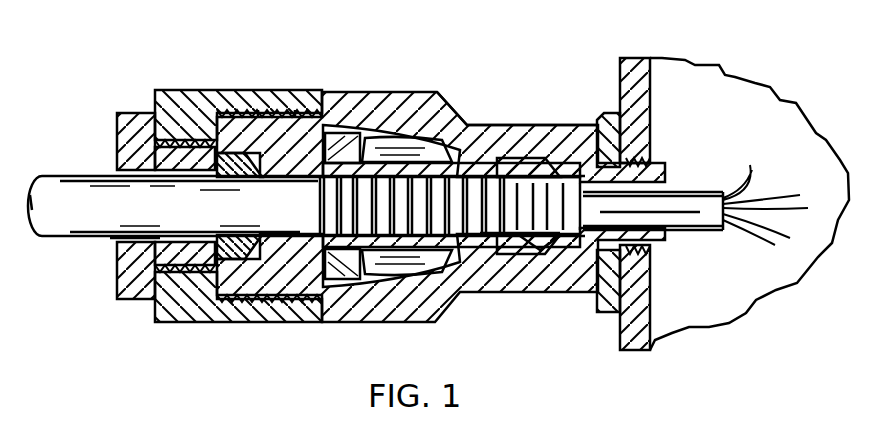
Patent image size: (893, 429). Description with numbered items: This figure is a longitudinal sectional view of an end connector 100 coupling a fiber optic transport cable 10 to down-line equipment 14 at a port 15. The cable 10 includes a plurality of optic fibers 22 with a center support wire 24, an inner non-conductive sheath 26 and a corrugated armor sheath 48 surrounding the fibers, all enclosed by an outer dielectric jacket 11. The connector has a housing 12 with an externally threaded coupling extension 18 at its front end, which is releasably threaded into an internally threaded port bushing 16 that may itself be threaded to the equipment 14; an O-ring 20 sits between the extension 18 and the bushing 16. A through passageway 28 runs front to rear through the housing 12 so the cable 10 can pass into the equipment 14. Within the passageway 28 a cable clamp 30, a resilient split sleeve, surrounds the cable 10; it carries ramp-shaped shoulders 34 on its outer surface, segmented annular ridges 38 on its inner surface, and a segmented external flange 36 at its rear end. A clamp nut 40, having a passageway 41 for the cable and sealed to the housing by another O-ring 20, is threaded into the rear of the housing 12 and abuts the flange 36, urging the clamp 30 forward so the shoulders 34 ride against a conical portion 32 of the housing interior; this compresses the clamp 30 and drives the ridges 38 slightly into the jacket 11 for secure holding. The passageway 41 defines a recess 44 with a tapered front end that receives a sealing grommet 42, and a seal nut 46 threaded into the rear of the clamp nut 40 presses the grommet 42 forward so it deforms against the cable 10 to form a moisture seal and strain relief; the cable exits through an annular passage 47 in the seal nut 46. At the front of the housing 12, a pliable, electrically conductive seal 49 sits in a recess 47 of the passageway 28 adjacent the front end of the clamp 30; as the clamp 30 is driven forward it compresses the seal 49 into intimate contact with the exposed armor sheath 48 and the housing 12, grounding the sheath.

The fiber optic transport cable 10 is at (70, 158).
The outer dielectric protective covering or jacket 11 is at (72, 237).
The housing 12 is at (427, 97).
The down-line equipment 14 is at (652, 97).
The port 15 is at (663, 147).
The port bushing 16 is at (597, 312).
The coupling extension 18 is at (660, 160).
The O-ring 20 is at (230, 110).
The optic fibers 22 is at (747, 190).
The center support wire 24 is at (790, 200).
The inner non-conductive sheath 26 is at (700, 232).
The through passageway 28 is at (365, 325).
The cable clamp 30 is at (388, 100).
The conical portion 32 is at (497, 133).
The ramp-shaped shoulders 34 is at (468, 132).
The segmented external flange 36 is at (338, 105).
The annular ridges 38 is at (447, 317).
The clamp nut 40 is at (175, 90).
The passageway 41 is at (295, 110).
The sealing grommet 42 is at (258, 110).
The recess 44 is at (262, 300).
The seal nut 46 is at (135, 112).
The annular passage / recess 47 is at (115, 242).
The corrugated armor sheath 48 is at (548, 133).
The conductive seal 49 is at (533, 295).
The end connector 100 is at (502, 72).